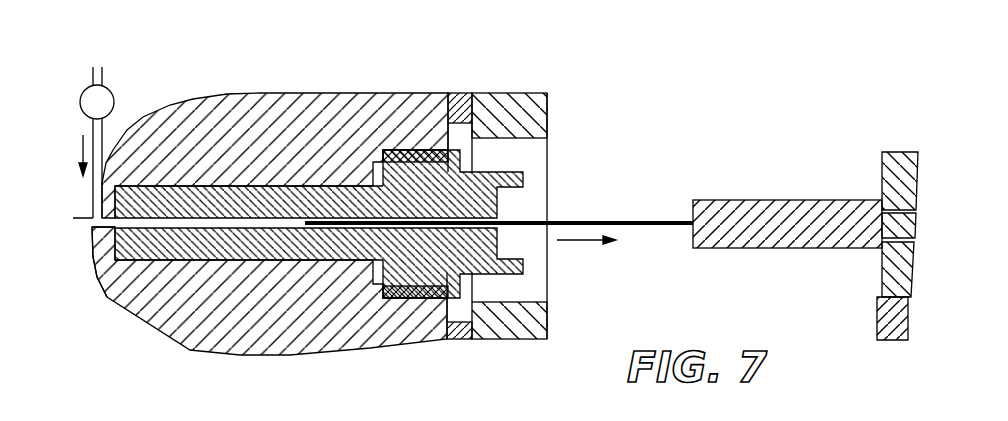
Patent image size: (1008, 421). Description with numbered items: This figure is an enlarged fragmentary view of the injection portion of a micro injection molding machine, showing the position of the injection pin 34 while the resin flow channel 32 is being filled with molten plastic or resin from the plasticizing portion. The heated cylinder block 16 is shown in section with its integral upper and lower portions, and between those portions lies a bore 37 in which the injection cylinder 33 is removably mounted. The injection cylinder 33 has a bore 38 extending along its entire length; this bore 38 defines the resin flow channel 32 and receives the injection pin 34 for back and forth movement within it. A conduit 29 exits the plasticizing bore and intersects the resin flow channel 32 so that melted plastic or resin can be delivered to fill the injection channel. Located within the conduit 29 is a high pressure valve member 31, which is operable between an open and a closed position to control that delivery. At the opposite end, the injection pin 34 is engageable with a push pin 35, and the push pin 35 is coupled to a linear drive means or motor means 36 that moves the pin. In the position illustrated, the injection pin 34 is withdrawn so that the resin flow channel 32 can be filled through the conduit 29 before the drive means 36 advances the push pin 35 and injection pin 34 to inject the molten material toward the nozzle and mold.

The heated cylinder block 16 is at (366, 104).
The conduit 29 is at (98, 137).
The high pressure valve member 31 is at (97, 102).
The resin flow channel 32 is at (95, 262).
The injection cylinder 33 is at (545, 188).
The injection pin 34 is at (598, 221).
The push pin 35 is at (733, 210).
The linear drive means 36 is at (892, 278).
The bore 37 is at (257, 190).
The bore 38 is at (217, 227).